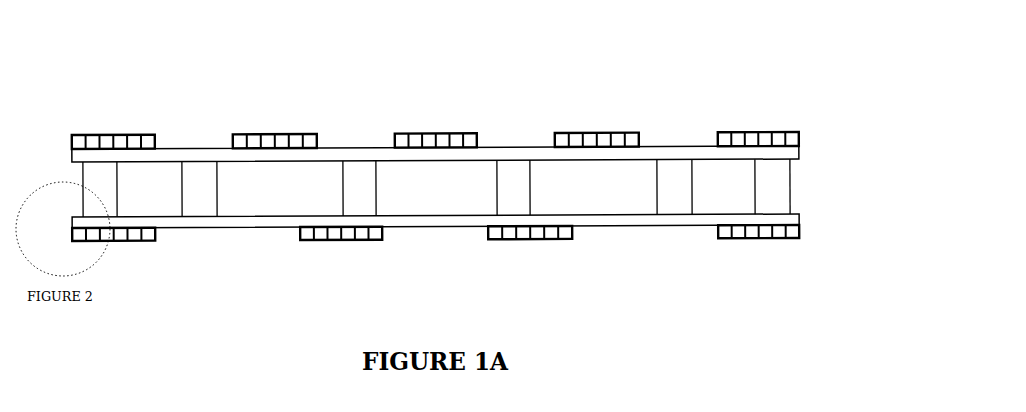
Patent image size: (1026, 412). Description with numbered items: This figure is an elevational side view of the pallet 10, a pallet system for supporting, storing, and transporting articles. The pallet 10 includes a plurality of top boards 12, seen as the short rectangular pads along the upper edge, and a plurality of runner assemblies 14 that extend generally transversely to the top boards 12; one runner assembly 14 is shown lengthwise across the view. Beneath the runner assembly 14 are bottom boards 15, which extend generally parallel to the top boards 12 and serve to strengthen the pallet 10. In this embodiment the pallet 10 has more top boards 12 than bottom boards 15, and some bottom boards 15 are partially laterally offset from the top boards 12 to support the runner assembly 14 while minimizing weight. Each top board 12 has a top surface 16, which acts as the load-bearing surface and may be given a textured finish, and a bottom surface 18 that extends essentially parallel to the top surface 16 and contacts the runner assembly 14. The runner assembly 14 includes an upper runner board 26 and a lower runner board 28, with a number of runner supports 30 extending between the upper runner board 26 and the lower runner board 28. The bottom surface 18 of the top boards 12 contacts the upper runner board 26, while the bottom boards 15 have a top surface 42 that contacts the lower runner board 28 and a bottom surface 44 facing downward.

The pallet 10 is at (418, 109).
The top boards 12 is at (749, 128).
The runner assemblies 14 is at (806, 188).
The bottom boards 15 is at (753, 245).
The top surface 16 is at (437, 135).
The bottom surface 18 is at (463, 136).
The upper runner board 26 is at (310, 153).
The lower runner board 28 is at (328, 218).
The runner supports 30 is at (513, 188).
The top surface 42 is at (560, 233).
The bottom surface 44 is at (538, 239).